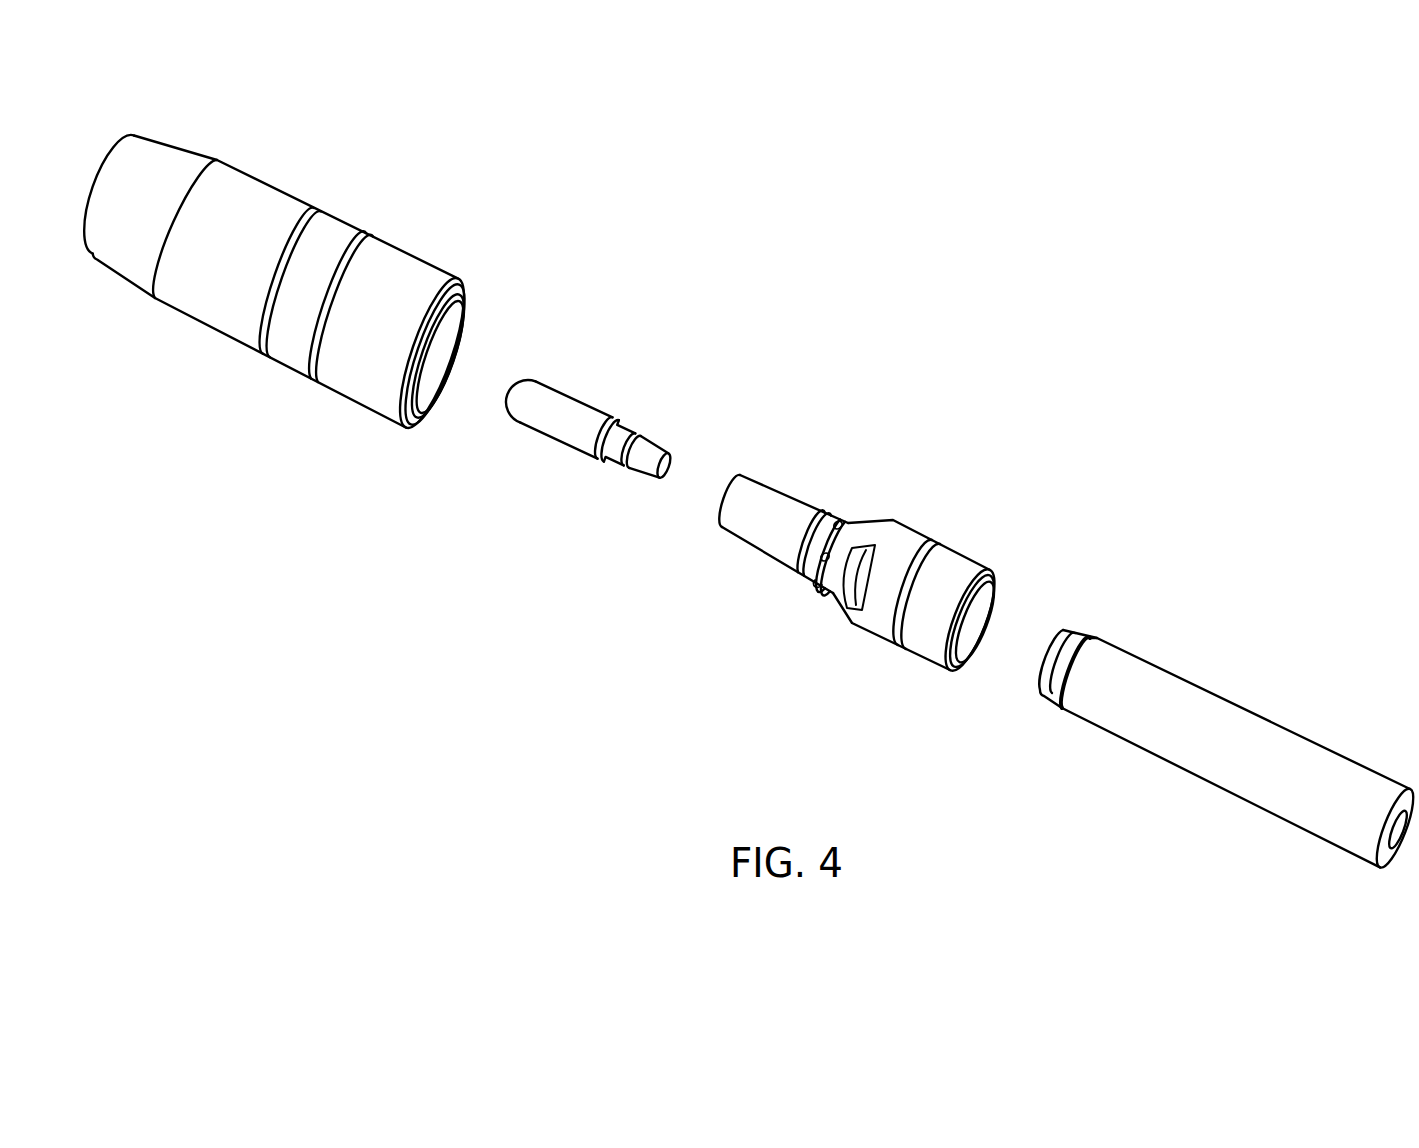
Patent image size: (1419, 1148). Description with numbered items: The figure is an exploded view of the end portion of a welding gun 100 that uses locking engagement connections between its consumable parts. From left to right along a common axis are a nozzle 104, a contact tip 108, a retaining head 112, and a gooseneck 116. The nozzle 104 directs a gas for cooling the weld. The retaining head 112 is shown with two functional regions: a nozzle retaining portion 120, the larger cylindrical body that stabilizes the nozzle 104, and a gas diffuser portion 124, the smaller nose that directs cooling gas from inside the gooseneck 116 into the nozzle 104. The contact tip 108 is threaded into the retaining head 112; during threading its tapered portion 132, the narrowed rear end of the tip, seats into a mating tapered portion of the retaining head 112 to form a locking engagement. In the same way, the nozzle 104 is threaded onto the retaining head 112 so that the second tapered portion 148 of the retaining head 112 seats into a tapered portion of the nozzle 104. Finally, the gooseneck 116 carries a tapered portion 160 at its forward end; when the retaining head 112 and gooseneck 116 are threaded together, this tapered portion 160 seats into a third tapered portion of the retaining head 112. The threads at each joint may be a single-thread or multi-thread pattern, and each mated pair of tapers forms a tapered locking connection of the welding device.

The welding gun 100 is at (490, 708).
The nozzle 104 is at (222, 173).
The contact tip 108 is at (550, 398).
The retaining head 112 is at (1015, 521).
The gooseneck 116 is at (1170, 683).
The nozzle retaining portion 120 is at (887, 662).
The gas diffuser portion 124 is at (782, 589).
The tapered portion 132 is at (652, 458).
The second tapered portion 148 is at (860, 527).
The tapered portion 160 is at (1070, 627).